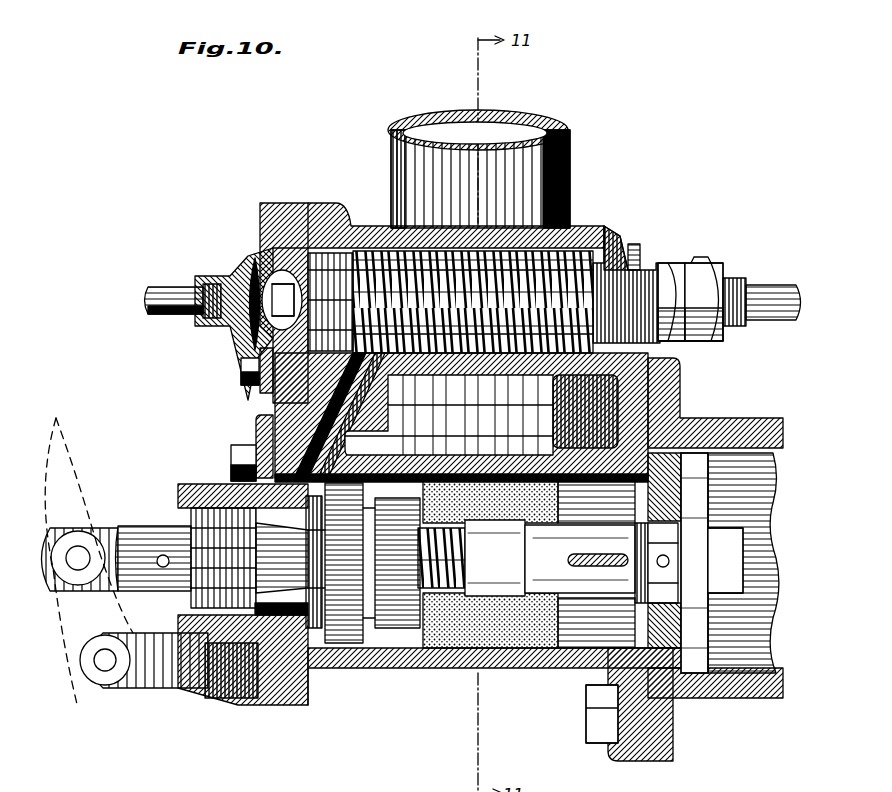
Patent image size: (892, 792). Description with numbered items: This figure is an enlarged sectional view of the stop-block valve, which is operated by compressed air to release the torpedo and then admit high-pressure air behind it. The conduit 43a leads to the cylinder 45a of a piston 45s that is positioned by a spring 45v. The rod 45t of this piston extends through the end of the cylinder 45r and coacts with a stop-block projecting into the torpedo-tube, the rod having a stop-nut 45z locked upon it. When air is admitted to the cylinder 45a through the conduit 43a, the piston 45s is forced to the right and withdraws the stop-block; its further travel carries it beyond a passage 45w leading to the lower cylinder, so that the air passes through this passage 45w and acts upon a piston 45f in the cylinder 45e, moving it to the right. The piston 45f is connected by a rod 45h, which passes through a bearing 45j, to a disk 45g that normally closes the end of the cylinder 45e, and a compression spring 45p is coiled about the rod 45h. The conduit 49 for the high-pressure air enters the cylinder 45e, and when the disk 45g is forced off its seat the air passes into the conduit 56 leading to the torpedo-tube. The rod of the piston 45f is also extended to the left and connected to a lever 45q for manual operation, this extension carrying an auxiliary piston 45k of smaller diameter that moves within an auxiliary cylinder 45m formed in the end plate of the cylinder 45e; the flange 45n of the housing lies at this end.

The conduit 43a is at (157, 285).
The cylinder 45a is at (245, 243).
The piston 45s is at (311, 218).
The cylinder 45r is at (346, 232).
The rod 45t is at (725, 272).
The conduit 49 is at (495, 142).
The spring 45v is at (578, 228).
The passage 45w is at (658, 266).
The stop-nut 45z is at (705, 258).
The conduit 56 is at (690, 420).
The auxiliary cylinder 45m is at (195, 480).
The lever 45q is at (55, 494).
The auxiliary piston 45k is at (185, 597).
The housing flange 45n is at (250, 698).
The piston 45f is at (323, 664).
The cylinder 45e is at (390, 642).
The compression spring 45p is at (438, 603).
The rod 45h is at (545, 791).
The bearing 45j is at (548, 572).
The disk 45g is at (686, 672).